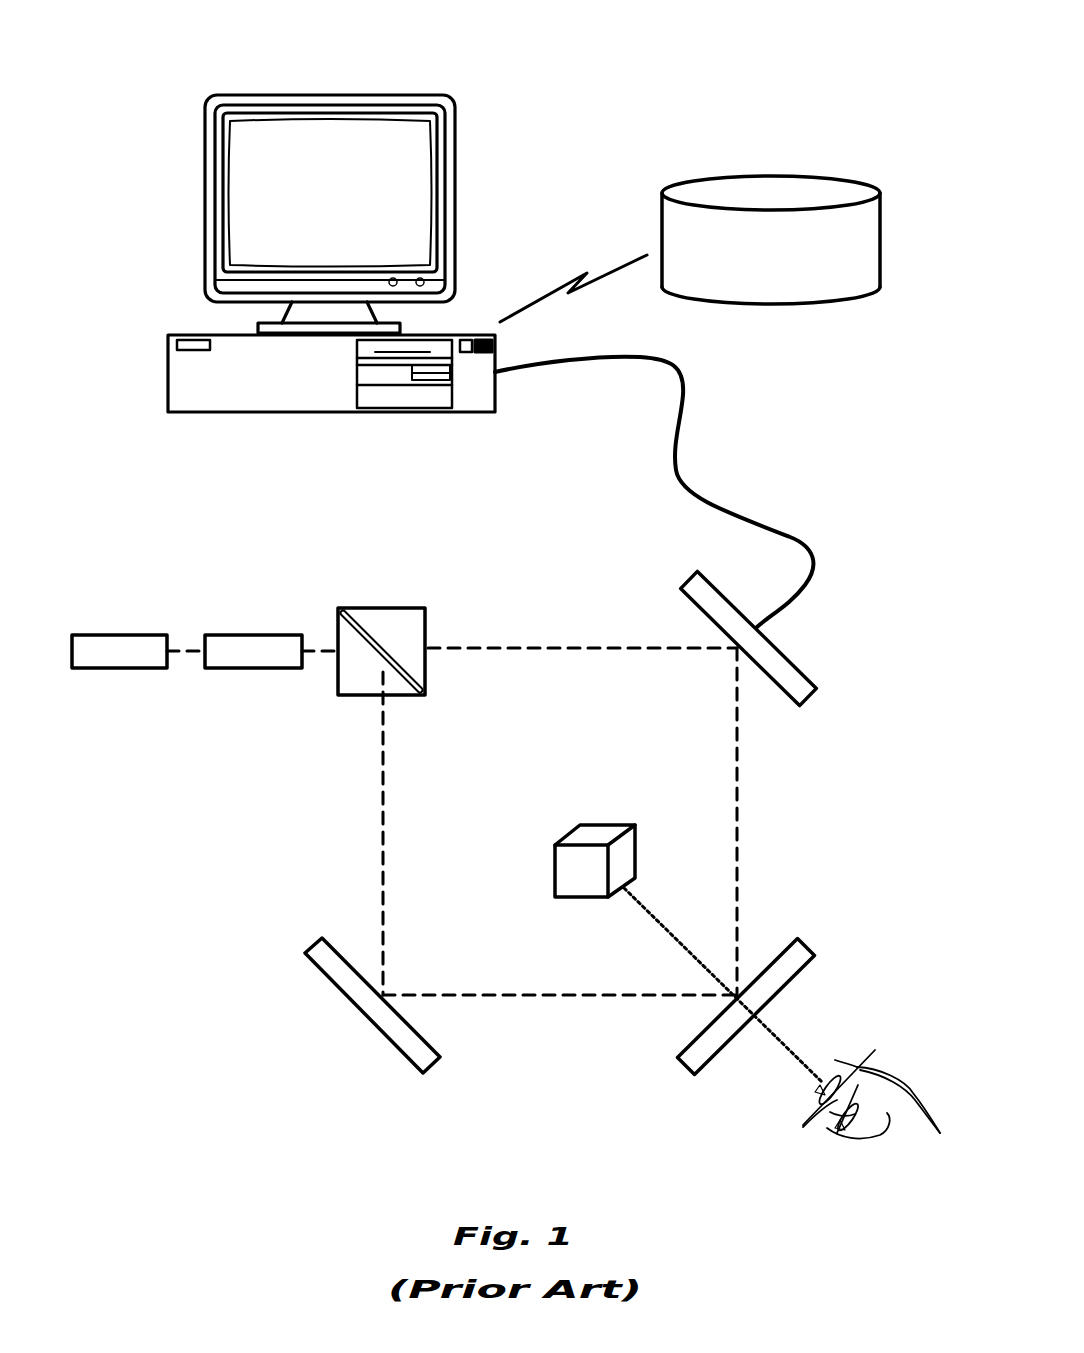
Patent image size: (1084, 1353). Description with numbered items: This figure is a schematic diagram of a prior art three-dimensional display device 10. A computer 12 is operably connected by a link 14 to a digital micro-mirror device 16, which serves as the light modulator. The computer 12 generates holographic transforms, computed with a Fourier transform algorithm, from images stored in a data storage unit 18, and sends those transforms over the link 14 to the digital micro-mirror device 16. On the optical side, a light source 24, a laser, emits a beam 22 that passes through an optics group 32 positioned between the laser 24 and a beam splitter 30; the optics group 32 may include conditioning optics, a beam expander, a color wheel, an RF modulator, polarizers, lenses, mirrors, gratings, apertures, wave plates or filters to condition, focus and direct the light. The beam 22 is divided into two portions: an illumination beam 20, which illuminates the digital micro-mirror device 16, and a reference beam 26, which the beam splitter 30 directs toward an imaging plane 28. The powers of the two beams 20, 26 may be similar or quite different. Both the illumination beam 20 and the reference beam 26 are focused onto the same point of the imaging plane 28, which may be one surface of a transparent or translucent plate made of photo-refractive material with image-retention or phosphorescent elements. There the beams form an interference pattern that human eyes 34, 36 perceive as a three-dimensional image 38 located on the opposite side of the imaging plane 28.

The three-dimensional display device 10 is at (737, 70).
The computer 12 is at (178, 217).
The link 14 is at (683, 420).
The digital micro-mirror device 16 is at (817, 688).
The data storage unit 18 is at (786, 262).
The illumination beam 20 is at (562, 646).
The beam 22 is at (191, 651).
The light source 24 is at (118, 634).
The reference beam 26 is at (380, 814).
The imaging plane 28 is at (815, 955).
The beam splitter 30 is at (362, 622).
The optics group 32 is at (250, 634).
The human eye 34 is at (804, 1097).
The human eye 36 is at (860, 1128).
The three-dimensional image 38 is at (552, 852).